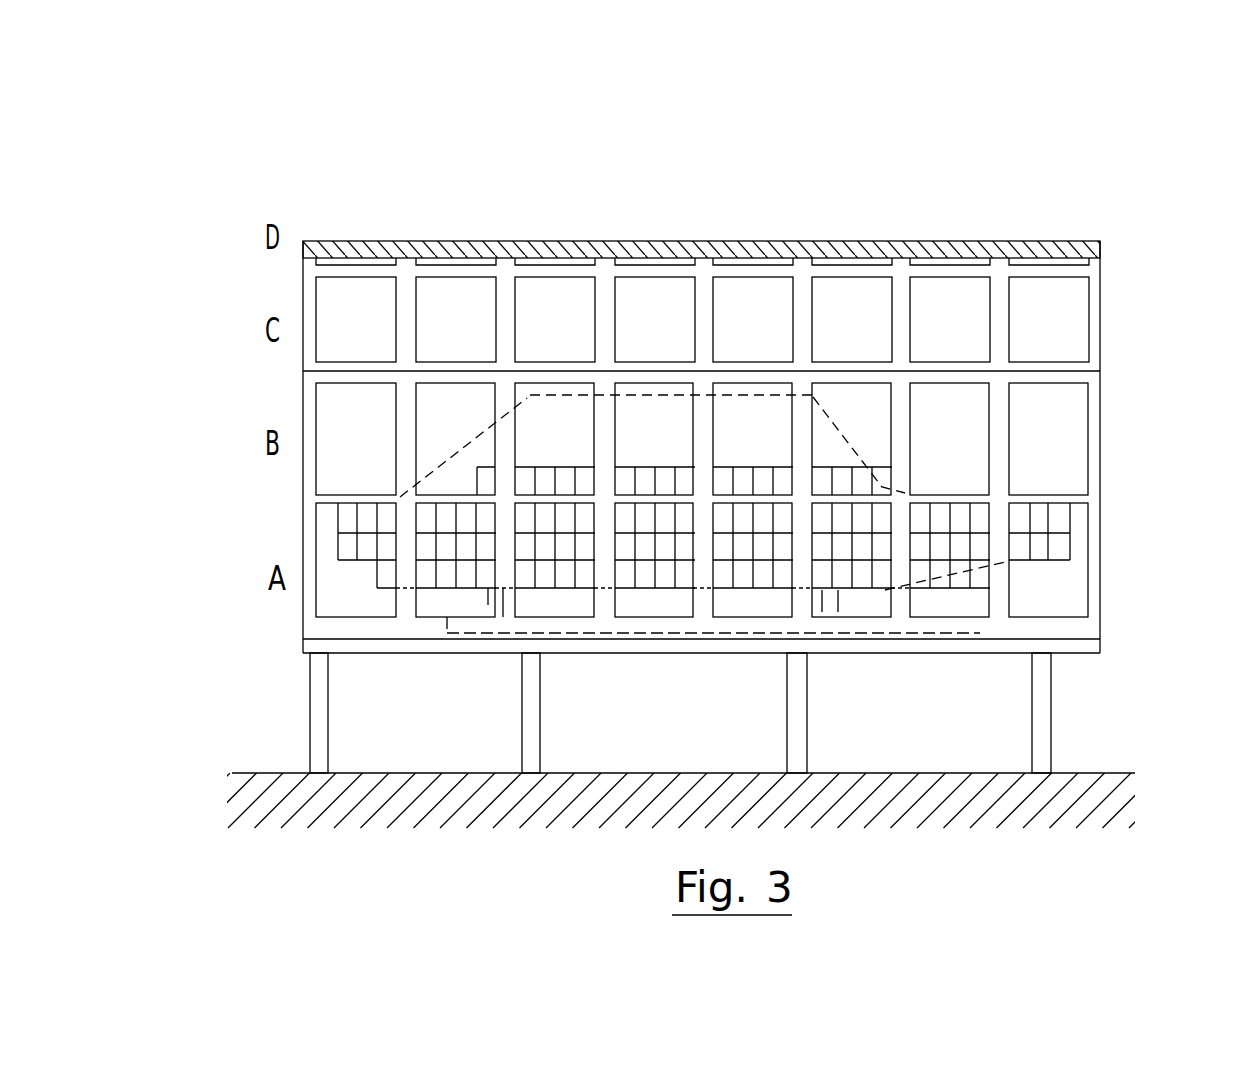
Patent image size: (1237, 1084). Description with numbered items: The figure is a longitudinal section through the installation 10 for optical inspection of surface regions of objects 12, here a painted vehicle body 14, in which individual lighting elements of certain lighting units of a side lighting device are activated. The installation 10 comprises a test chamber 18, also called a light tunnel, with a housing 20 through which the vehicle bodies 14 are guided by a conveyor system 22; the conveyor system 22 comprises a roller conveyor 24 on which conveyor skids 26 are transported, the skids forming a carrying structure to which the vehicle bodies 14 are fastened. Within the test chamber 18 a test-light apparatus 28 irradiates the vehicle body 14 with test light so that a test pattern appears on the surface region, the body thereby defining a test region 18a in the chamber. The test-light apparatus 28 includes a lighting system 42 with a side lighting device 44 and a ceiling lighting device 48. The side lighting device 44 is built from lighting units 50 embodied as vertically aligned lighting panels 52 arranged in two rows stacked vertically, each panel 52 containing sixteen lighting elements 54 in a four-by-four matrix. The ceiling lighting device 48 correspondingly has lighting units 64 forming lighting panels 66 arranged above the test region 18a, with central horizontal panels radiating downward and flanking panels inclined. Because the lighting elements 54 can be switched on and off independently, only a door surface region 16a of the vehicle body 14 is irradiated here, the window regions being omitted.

The installation 10 is at (1150, 160).
The object 12 is at (703, 393).
The vehicle body 14 is at (647, 395).
The door surface region 16a is at (1040, 548).
The test chamber 18 is at (801, 276).
The test region 18a is at (852, 452).
The housing 20 is at (1023, 243).
The conveyor system 22 is at (1038, 630).
The roller conveyor 24 is at (1017, 632).
The conveyor skid 26 is at (654, 620).
The test-light apparatus 28 is at (1100, 320).
The lighting system 42 is at (1102, 370).
The side lighting device 44 is at (305, 492).
The ceiling lighting device 48 is at (305, 280).
The lighting unit 50 is at (447, 403).
The lighting panel 52 is at (423, 402).
The lighting element 54 is at (345, 537).
The lighting unit 64 is at (568, 252).
The lighting panel 66 is at (526, 241).